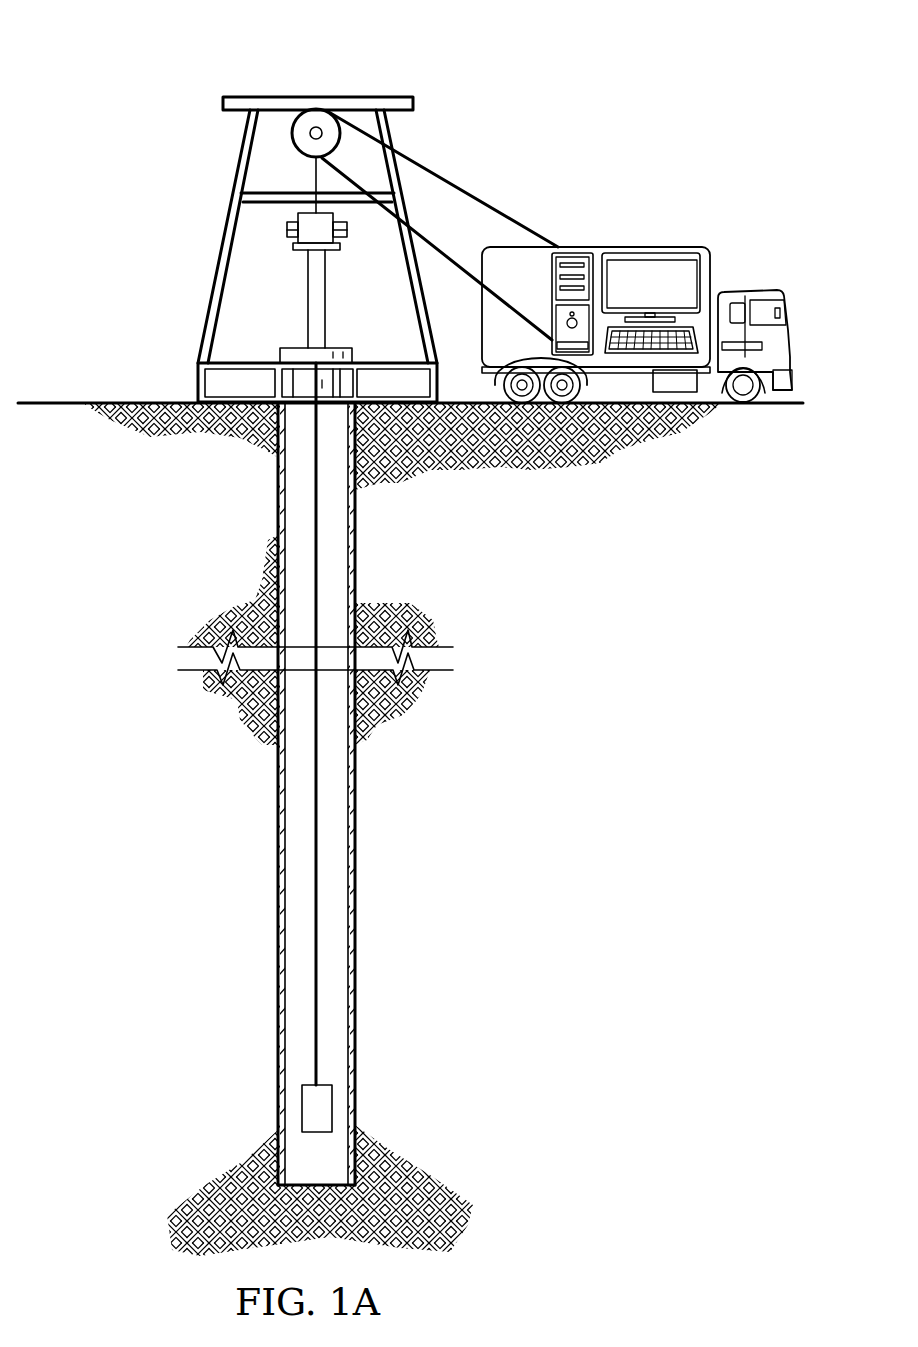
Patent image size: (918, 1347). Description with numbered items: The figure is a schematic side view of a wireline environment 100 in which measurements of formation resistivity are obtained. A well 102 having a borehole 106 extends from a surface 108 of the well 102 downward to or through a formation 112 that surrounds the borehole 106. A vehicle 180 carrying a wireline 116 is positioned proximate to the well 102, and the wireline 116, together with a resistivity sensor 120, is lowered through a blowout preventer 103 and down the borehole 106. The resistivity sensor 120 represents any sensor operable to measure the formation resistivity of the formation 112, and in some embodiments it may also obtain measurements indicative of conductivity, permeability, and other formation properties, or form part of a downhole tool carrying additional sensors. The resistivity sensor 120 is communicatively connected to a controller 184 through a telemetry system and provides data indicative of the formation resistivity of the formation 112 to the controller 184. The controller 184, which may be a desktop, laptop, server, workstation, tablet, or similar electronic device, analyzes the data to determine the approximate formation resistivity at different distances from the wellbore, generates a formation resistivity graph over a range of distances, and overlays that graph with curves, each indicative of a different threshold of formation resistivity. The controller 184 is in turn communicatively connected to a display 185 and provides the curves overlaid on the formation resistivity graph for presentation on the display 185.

The wireline environment 100 is at (133, 60).
The well 102 is at (348, 335).
The blowout preventer 103 is at (306, 284).
The borehole 106 is at (353, 547).
The surface 108 is at (137, 402).
The formation 112 is at (462, 1207).
The wireline 116 is at (315, 912).
The resistivity sensor 120 is at (302, 1092).
The vehicle 180 is at (637, 292).
The controller 184 is at (570, 255).
The display 185 is at (650, 255).